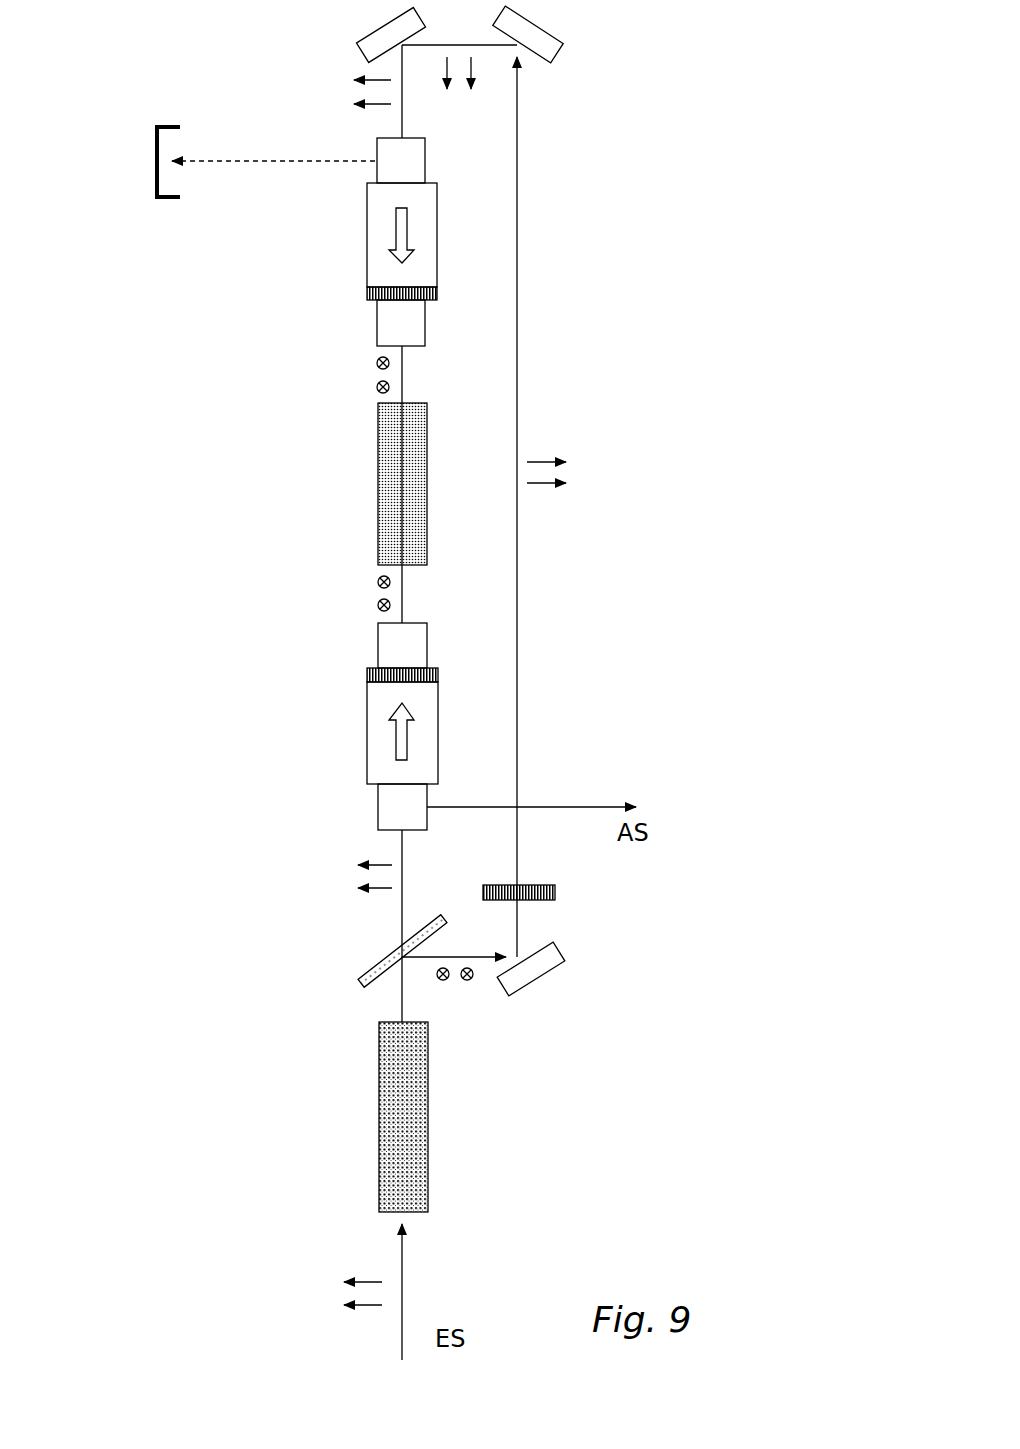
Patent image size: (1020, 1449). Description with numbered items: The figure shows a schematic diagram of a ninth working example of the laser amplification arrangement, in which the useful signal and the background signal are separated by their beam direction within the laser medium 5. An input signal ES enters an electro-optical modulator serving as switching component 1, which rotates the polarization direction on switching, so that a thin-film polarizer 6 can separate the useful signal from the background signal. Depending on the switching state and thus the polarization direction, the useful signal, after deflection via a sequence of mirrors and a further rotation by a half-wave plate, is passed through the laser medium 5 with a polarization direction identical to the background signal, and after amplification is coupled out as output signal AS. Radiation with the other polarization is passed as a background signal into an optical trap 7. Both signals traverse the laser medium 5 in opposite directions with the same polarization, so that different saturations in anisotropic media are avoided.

The switching component 1 is at (407, 1140).
The laser medium 5 is at (385, 483).
The thin-film polarizer 6 is at (390, 948).
The optical trap 7 is at (155, 127).